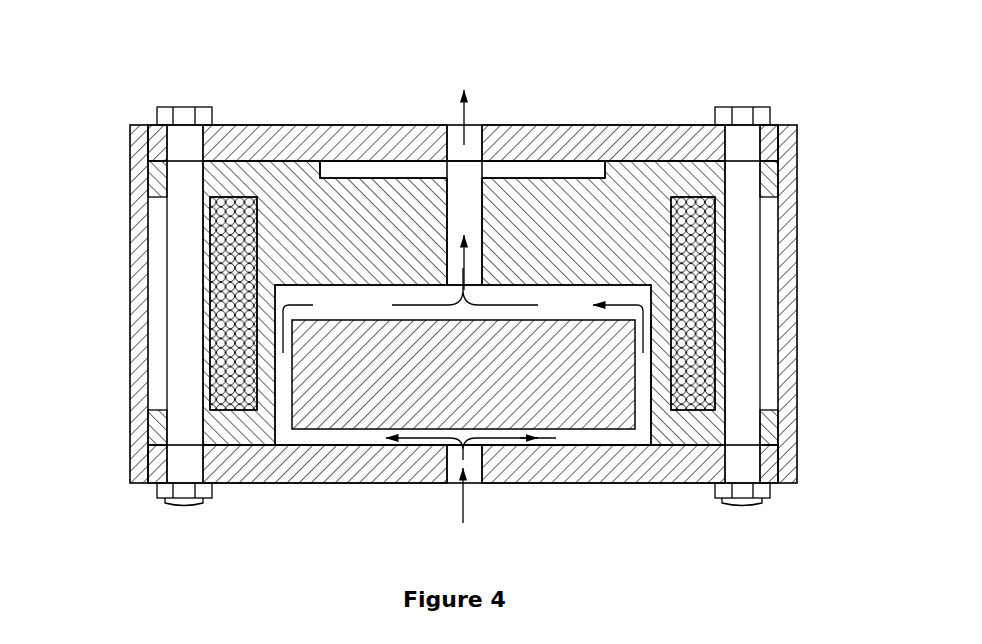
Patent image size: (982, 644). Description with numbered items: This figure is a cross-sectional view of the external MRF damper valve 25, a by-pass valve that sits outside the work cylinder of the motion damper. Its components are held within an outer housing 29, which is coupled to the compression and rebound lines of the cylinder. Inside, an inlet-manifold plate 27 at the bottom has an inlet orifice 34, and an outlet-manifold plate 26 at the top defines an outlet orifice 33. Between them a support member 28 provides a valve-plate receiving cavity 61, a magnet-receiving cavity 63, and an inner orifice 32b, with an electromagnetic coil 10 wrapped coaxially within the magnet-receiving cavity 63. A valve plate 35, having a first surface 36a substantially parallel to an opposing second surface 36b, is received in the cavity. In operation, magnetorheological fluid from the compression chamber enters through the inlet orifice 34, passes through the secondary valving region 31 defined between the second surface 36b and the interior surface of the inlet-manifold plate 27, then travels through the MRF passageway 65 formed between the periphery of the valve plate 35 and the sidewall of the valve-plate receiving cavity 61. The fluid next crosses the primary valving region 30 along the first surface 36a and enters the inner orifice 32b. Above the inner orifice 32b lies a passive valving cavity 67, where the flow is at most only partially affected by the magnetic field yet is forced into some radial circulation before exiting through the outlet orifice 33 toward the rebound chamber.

The electromagnetic coil 10 is at (237, 277).
The external MRF damper valve 25 is at (733, 103).
The outlet-manifold plate 26 is at (408, 130).
The inlet-manifold plate 27 is at (625, 462).
The support member 28 is at (605, 240).
The outer housing 29 is at (790, 312).
The primary valving region 30 is at (353, 308).
The secondary valving region 31 is at (362, 443).
The inner orifice 32b is at (458, 232).
The outlet orifice 33 is at (472, 128).
The inlet orifice 34 is at (475, 475).
The valve plate 35 is at (378, 378).
The first surface 36a is at (565, 320).
The second surface 36b is at (565, 430).
The valve-plate receiving cavity 61 is at (282, 353).
The magnet-receiving cavity 63 is at (456, 231).
The MRF passageway 65 is at (643, 392).
The valving cavity 67 is at (565, 163).